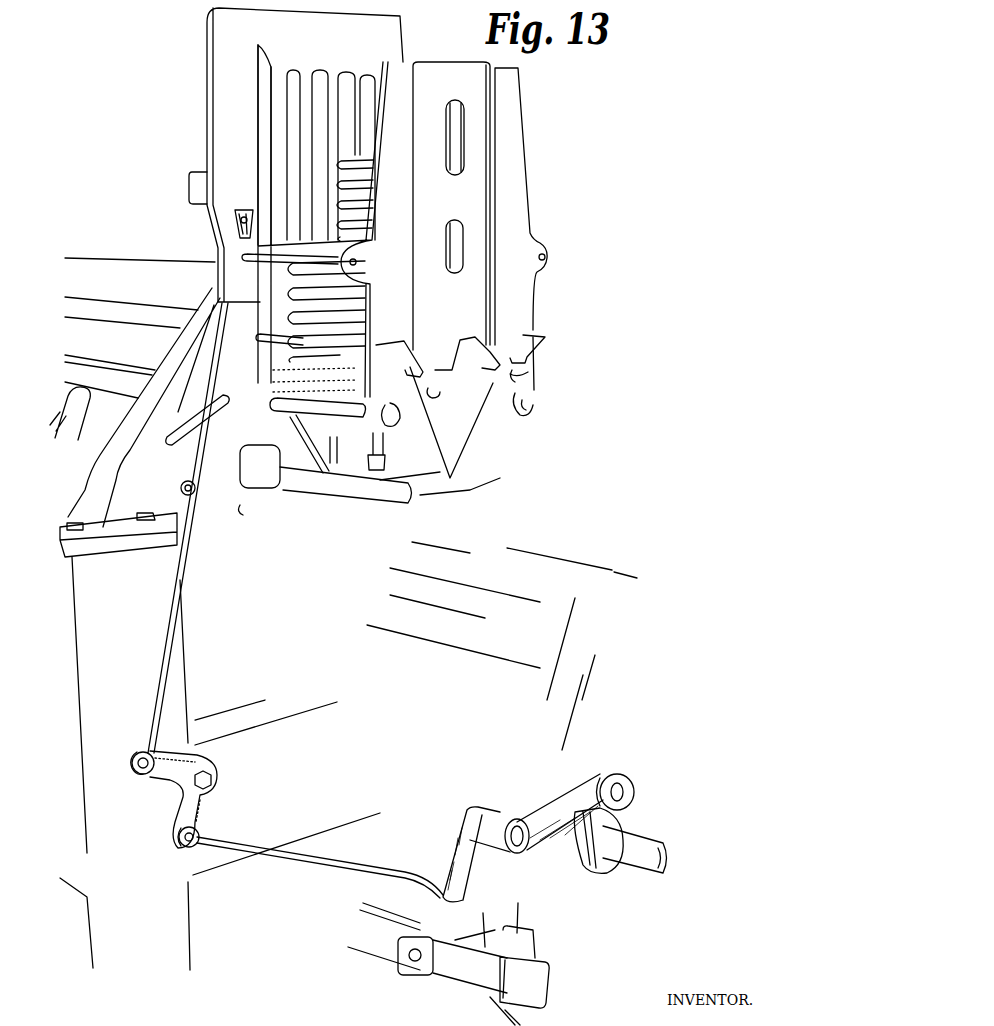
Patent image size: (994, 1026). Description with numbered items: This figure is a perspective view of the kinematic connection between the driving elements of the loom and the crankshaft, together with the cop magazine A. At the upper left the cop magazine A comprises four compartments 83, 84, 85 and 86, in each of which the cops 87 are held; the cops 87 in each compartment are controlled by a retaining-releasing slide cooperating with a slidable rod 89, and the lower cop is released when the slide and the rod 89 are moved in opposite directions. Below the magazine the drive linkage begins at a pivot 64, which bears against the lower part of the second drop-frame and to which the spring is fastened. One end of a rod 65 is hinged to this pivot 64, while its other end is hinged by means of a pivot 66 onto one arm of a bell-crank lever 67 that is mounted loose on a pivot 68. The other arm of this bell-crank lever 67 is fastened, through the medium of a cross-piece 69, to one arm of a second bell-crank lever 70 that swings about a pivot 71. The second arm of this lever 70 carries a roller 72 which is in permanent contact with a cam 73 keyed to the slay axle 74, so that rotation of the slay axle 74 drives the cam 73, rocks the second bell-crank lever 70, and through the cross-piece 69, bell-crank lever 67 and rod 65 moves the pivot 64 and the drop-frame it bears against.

The cop magazine A is at (561, 83).
The pivot 64 is at (247, 212).
The rod 65 is at (163, 642).
The pivot 66 is at (140, 777).
The bell-crank lever 67 is at (168, 782).
The pivot 68 is at (212, 781).
The cross-piece 69 is at (337, 863).
The second bell-crank lever 70 is at (483, 808).
The pivot 71 is at (517, 850).
The roller 72 is at (622, 781).
The cam 73 is at (600, 878).
The slay axle 74 is at (655, 838).
The compartment 83 is at (278, 70).
The compartment 84 is at (307, 80).
The compartment 85 is at (335, 80).
The compartment 86 is at (360, 84).
The cops 87 is at (352, 164).
The slidable rod 89 is at (546, 356).